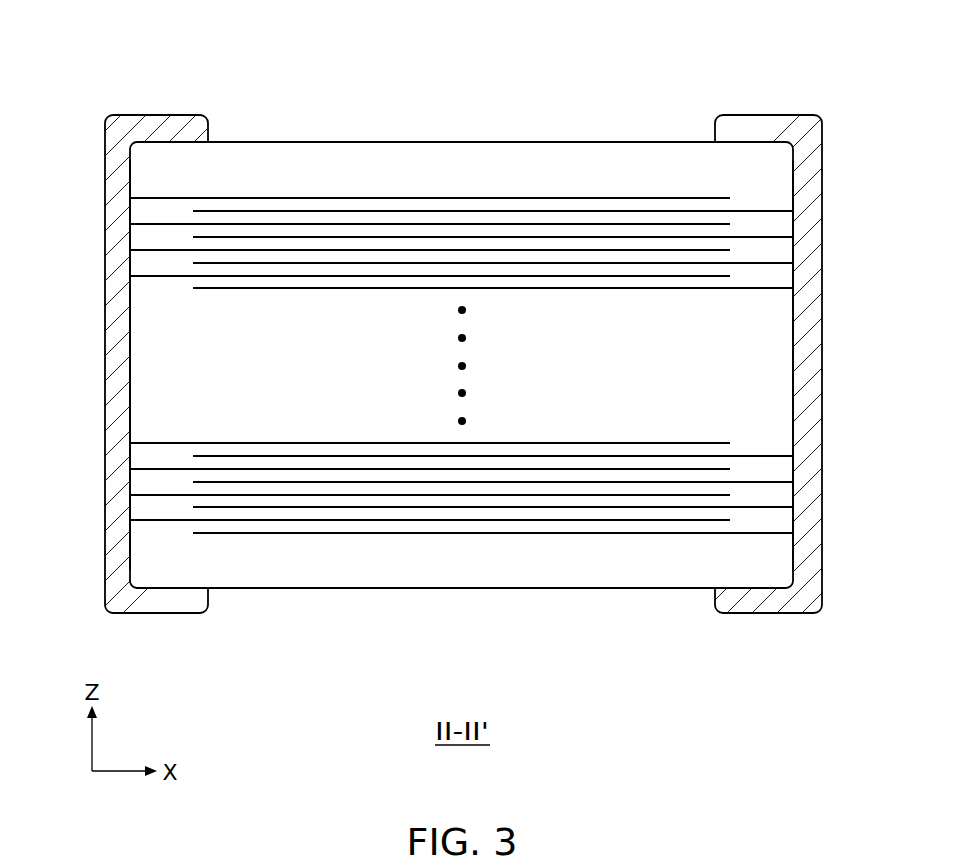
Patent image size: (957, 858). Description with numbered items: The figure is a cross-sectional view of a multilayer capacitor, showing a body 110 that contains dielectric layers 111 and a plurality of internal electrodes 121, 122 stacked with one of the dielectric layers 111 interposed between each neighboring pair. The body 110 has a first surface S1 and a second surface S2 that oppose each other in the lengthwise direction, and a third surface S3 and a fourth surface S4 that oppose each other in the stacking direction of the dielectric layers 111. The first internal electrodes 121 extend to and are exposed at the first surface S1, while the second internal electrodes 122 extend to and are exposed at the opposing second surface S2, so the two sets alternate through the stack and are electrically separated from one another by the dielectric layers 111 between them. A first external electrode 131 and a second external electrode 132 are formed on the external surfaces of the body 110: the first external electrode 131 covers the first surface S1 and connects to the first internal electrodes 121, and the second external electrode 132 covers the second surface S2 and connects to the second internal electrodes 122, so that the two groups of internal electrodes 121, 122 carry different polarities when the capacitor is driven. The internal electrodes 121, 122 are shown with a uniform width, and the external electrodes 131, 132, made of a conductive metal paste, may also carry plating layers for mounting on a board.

The body 110 is at (302, 128).
The dielectric layers 111 is at (650, 205).
The first internal electrode 121 is at (492, 197).
The second internal electrode 122 is at (568, 209).
The first external electrode 131 is at (155, 127).
The second external electrode 132 is at (754, 127).
The first surface S1 is at (116, 368).
The second surface S2 is at (808, 365).
The third surface S3 is at (406, 128).
The fourth surface S4 is at (406, 603).